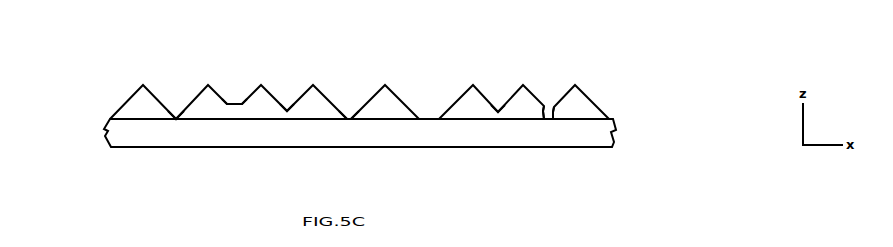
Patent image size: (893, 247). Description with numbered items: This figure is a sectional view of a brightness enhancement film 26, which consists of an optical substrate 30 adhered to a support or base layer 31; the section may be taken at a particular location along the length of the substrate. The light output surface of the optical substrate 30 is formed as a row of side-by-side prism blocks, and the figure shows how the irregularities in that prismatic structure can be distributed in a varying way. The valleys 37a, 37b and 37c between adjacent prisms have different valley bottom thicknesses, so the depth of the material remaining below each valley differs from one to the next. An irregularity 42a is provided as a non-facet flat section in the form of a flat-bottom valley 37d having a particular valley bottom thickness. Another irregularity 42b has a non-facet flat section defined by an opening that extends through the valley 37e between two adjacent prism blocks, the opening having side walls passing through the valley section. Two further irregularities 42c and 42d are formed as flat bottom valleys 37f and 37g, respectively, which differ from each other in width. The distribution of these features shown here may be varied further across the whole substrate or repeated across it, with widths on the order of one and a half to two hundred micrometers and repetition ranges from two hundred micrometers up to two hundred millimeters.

The brightness enhancement film 26 is at (646, 60).
The optical substrate 30 is at (118, 99).
The support or base layer 31 is at (104, 141).
The valley 37a is at (175, 111).
The valley 37b is at (291, 104).
The valley 37c is at (497, 104).
The flat-bottom valley 37d is at (233, 120).
The valley 37e is at (548, 130).
The flat bottom valley 37f is at (345, 130).
The flat bottom valley 37g is at (430, 130).
The irregularity 42a is at (237, 96).
The irregularity 42b is at (550, 96).
The irregularity 42c is at (348, 112).
The irregularity 42d is at (429, 112).